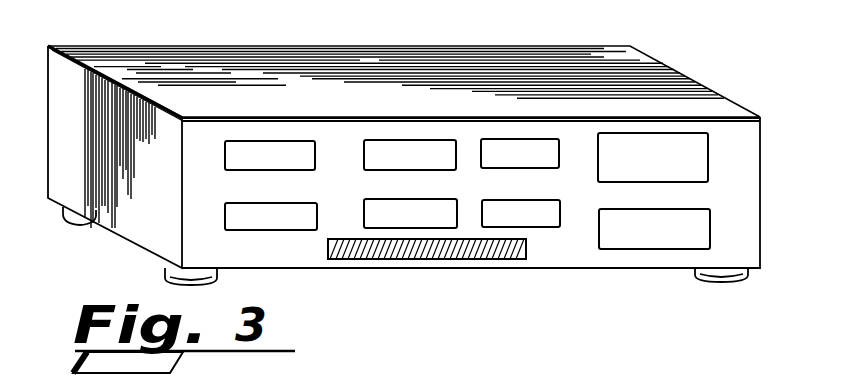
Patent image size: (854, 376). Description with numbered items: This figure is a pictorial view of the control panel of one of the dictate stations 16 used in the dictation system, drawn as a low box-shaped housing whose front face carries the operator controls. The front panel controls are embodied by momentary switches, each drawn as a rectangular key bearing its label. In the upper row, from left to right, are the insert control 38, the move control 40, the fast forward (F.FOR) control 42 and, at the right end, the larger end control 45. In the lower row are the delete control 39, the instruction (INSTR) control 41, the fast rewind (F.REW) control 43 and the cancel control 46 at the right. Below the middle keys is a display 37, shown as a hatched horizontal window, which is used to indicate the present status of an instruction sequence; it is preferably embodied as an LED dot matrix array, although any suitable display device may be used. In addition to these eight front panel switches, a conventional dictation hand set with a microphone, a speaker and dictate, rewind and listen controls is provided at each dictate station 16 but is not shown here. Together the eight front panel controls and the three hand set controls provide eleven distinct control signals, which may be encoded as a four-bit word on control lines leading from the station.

The dictate station 16 is at (645, 58).
The display 37 is at (328, 248).
The insert control 38 is at (225, 149).
The delete control 39 is at (225, 211).
The move control 40 is at (364, 157).
The instruction control 41 is at (364, 217).
The fast forward control 42 is at (481, 151).
The fast rewind control 43 is at (560, 212).
The end control 45 is at (708, 161).
The cancel control 46 is at (710, 223).